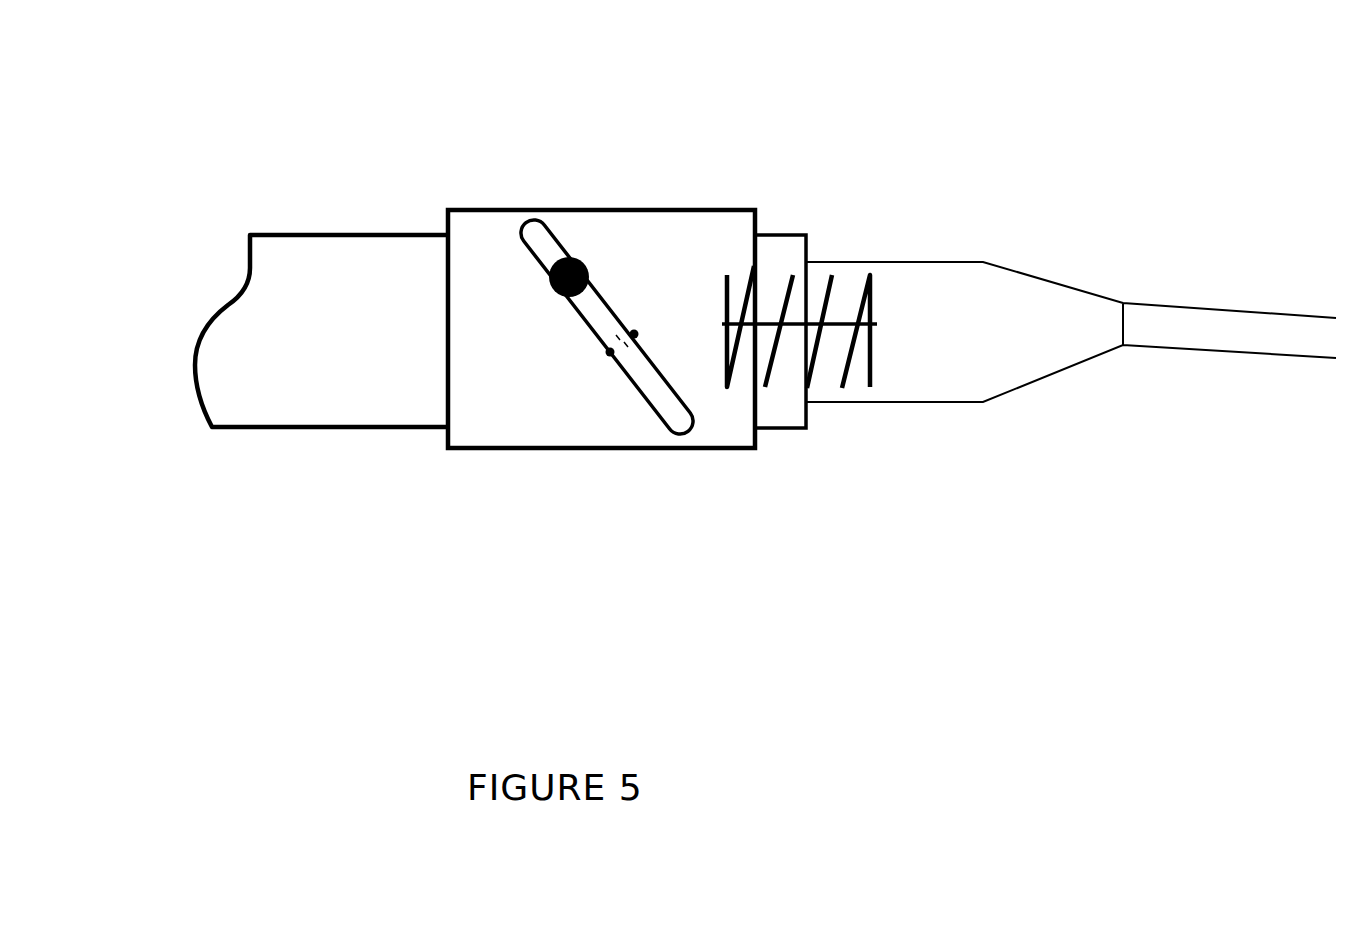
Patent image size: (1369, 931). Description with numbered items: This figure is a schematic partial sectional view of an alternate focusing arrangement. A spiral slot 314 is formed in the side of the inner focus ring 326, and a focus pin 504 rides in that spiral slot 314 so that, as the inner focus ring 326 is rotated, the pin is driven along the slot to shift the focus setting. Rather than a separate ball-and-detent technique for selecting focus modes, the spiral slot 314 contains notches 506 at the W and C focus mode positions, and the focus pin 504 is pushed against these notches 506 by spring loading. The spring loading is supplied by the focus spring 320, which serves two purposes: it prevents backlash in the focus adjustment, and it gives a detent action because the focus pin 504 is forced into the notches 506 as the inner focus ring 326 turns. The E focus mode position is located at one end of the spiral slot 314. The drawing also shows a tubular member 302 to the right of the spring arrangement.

The tubular shaft 302 is at (1205, 321).
The spiral slot 314 is at (697, 423).
The focus spring 320 is at (886, 368).
The inner focus ring 326 is at (704, 241).
The focus pin 504 is at (571, 235).
The notches 506 is at (596, 381).